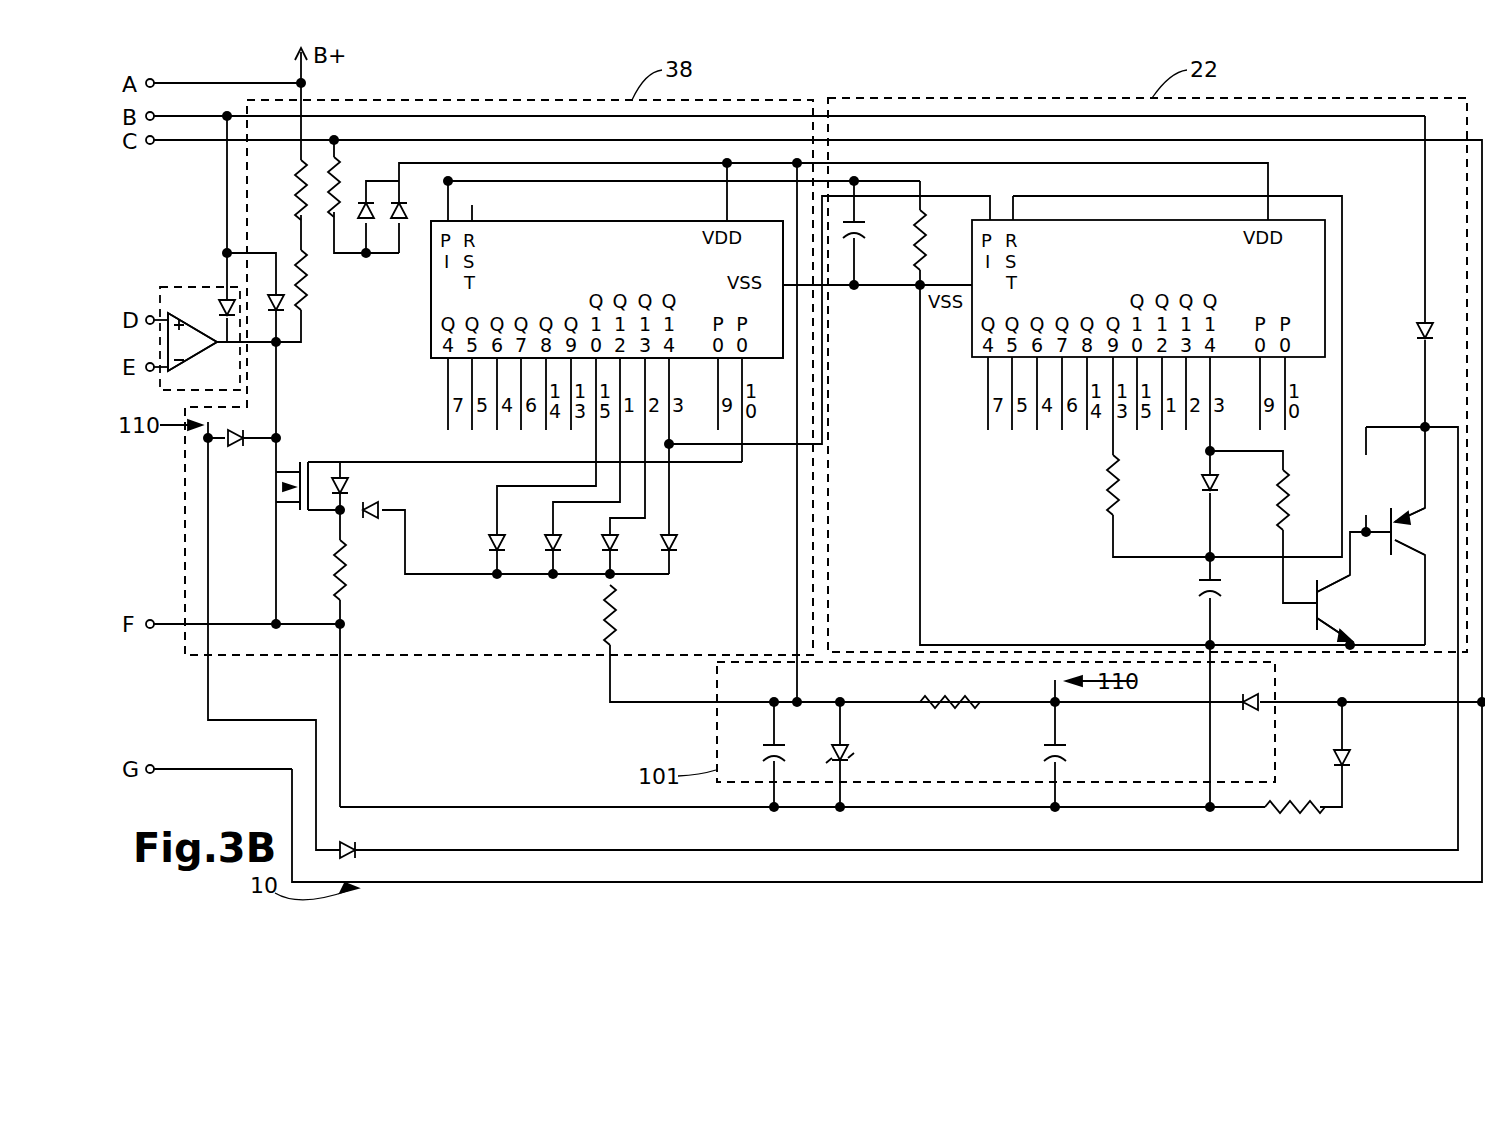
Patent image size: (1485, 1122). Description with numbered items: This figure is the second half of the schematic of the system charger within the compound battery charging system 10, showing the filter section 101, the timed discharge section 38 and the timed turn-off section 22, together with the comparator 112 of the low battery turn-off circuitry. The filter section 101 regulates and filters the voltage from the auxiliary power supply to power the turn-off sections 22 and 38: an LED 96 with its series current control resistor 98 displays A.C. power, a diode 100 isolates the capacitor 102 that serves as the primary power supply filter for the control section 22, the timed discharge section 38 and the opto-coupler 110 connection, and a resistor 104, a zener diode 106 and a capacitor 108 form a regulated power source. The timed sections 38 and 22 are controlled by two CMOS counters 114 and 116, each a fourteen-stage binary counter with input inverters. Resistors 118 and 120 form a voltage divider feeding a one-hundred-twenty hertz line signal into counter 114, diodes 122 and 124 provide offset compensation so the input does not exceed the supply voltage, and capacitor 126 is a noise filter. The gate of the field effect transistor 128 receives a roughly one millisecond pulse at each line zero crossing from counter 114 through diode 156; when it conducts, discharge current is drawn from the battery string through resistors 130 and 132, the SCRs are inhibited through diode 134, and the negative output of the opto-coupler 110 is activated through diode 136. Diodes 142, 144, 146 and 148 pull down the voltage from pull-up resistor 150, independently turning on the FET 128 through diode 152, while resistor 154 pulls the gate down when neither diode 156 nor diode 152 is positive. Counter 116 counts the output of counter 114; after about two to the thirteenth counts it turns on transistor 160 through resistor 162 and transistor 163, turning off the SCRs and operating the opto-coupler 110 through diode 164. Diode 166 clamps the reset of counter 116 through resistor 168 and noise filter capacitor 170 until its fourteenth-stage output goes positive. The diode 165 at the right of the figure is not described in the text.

The compound battery charging system 10 is at (866, 885).
The timed turn-off section 22 is at (1147, 354).
The timed discharge section 38 is at (499, 356).
The LED 96 is at (1352, 762).
The series current control resistor 98 is at (1290, 815).
The diode 100 is at (1252, 712).
The filter section 101 is at (956, 725).
The capacitor 102 is at (1065, 745).
The resistor 104 is at (935, 712).
The zener diode 106 is at (850, 754).
The capacitor 108 is at (760, 765).
The opto-coupler 110 is at (159, 425).
The comparator 112 is at (190, 305).
The counter 114 is at (595, 235).
The counter 116 is at (222, 300).
The resistor 118 is at (340, 195).
The resistor 120 is at (925, 235).
The diode 122 is at (355, 225).
The diode 124 is at (405, 225).
The capacitor 126 is at (860, 232).
The field effect transistor 128 is at (275, 500).
The resistor 130 is at (298, 170).
The resistor 132 is at (302, 283).
The diode 134 is at (274, 295).
The diode 136 is at (242, 448).
The diode 142 is at (490, 540).
The diode 144 is at (545, 540).
The diode 146 is at (602, 540).
The diode 148 is at (678, 540).
The pull-up resistor 150 is at (603, 600).
The diode 152 is at (380, 508).
The resistor 154 is at (335, 565).
The diode 156 is at (340, 478).
The transistor 160 is at (1410, 550).
The resistor 162 is at (1277, 505).
The transistor 163 is at (1335, 625).
The diode 164 is at (350, 843).
The diode 165 is at (1418, 333).
The diode 166 is at (1203, 485).
The resistor 168 is at (1108, 493).
The noise filter capacitor 170 is at (1200, 582).